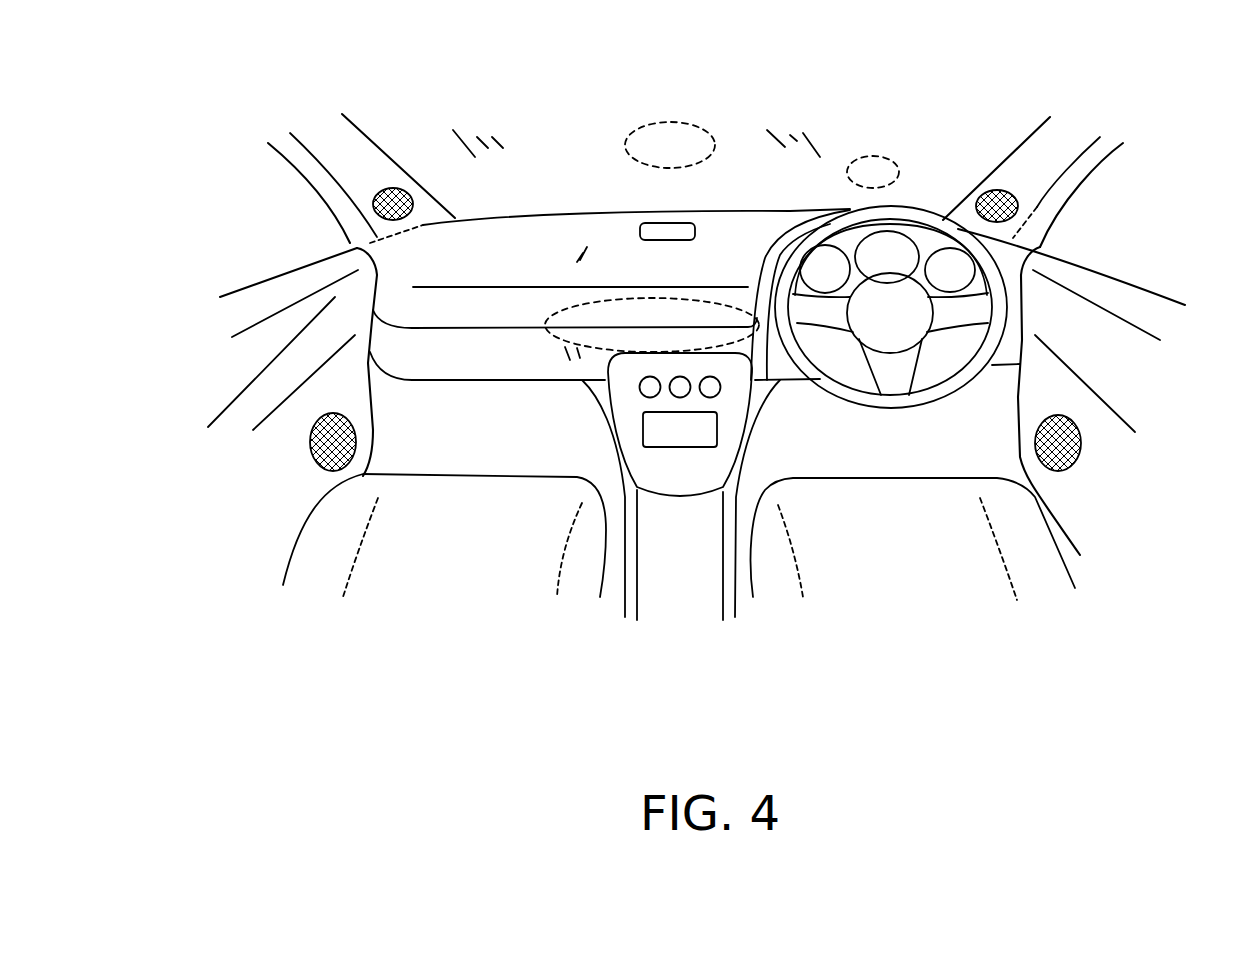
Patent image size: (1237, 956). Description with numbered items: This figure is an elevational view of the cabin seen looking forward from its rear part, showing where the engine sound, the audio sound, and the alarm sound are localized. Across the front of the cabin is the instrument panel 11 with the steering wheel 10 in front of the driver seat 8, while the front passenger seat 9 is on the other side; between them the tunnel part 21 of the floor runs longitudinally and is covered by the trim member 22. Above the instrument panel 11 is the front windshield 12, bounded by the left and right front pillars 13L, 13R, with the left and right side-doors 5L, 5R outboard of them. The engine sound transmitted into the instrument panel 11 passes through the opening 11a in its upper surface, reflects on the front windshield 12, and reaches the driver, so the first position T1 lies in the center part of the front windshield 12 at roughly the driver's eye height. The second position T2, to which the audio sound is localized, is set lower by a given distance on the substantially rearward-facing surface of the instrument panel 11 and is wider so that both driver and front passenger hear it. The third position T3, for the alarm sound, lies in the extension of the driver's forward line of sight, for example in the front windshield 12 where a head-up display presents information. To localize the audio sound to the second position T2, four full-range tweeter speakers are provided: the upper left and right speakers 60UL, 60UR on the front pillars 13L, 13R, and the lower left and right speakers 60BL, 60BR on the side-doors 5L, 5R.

The left side-door 5L is at (255, 297).
The right side-door 5R is at (1130, 335).
The driver seat 8 is at (912, 570).
The front passenger seat 9 is at (418, 572).
The steering wheel 10 is at (872, 403).
The instrument panel 11 is at (508, 240).
The opening 11a is at (647, 225).
The front windshield 12 is at (948, 140).
The left front pillar 13L is at (325, 145).
The right front pillar 13R is at (1053, 158).
The tunnel part 21 is at (660, 526).
The trim member 22 is at (648, 565).
The upper left speaker 60UL is at (400, 188).
The upper right speaker 60UR is at (1018, 205).
The lower left speaker 60BL is at (310, 447).
The lower right speaker 60BR is at (1082, 440).
The first position T1 is at (675, 137).
The second position T2 is at (557, 310).
The third position T3 is at (877, 165).